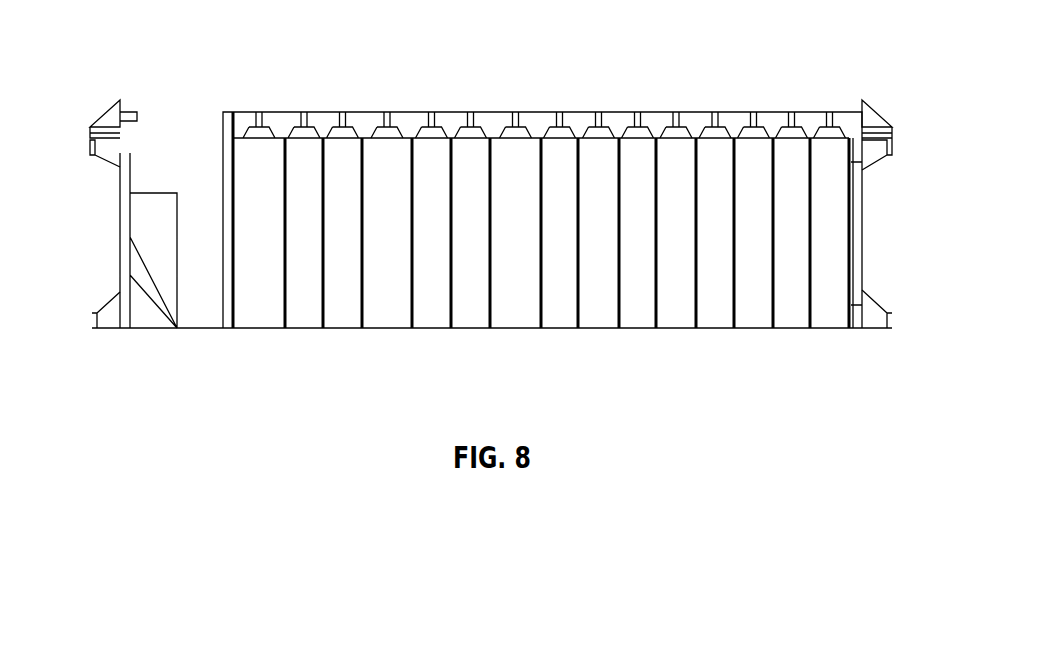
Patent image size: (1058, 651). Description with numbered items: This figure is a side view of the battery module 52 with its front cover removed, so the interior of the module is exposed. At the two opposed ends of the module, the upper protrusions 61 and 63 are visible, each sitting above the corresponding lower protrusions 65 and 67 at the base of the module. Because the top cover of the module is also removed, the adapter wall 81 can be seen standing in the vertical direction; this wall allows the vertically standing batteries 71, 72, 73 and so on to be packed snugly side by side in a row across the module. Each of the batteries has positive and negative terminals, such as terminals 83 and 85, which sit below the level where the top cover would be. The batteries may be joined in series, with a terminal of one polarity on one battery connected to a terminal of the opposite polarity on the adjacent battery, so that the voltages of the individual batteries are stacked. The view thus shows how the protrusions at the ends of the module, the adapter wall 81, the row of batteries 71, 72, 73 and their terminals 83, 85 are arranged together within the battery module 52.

The battery module 52 is at (705, 343).
The upper protrusion 61 is at (876, 123).
The upper protrusion 63 is at (102, 122).
The lower protrusion 65 is at (882, 315).
The lower protrusion 67 is at (110, 310).
The battery 71 is at (265, 155).
The battery 72 is at (295, 150).
The battery 73 is at (352, 153).
The adapter wall 81 is at (222, 137).
The terminal 83 is at (677, 122).
The terminal 85 is at (792, 122).